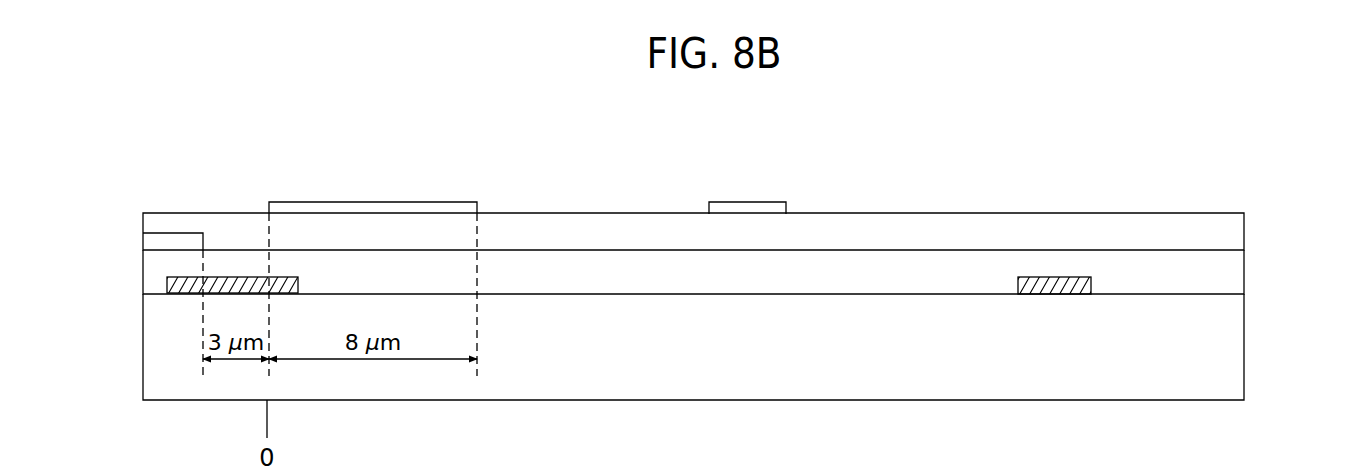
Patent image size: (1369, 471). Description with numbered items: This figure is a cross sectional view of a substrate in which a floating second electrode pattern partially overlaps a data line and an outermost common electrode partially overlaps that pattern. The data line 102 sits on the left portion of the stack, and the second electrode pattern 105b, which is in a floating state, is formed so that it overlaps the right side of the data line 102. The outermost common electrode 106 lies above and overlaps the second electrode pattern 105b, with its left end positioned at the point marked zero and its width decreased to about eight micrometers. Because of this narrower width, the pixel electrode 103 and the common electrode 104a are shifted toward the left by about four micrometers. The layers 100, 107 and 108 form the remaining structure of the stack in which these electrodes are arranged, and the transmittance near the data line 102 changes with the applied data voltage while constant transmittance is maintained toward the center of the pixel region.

The substrate 100 is at (1234, 345).
The data line 102 is at (161, 241).
The pixel electrode 103 is at (747, 210).
The common electrode 104a is at (1055, 287).
The second electrode pattern 105b is at (235, 285).
The outermost common electrode 106 is at (372, 209).
The insulating layer 107 is at (1234, 273).
The passivation layer 108 is at (1234, 231).